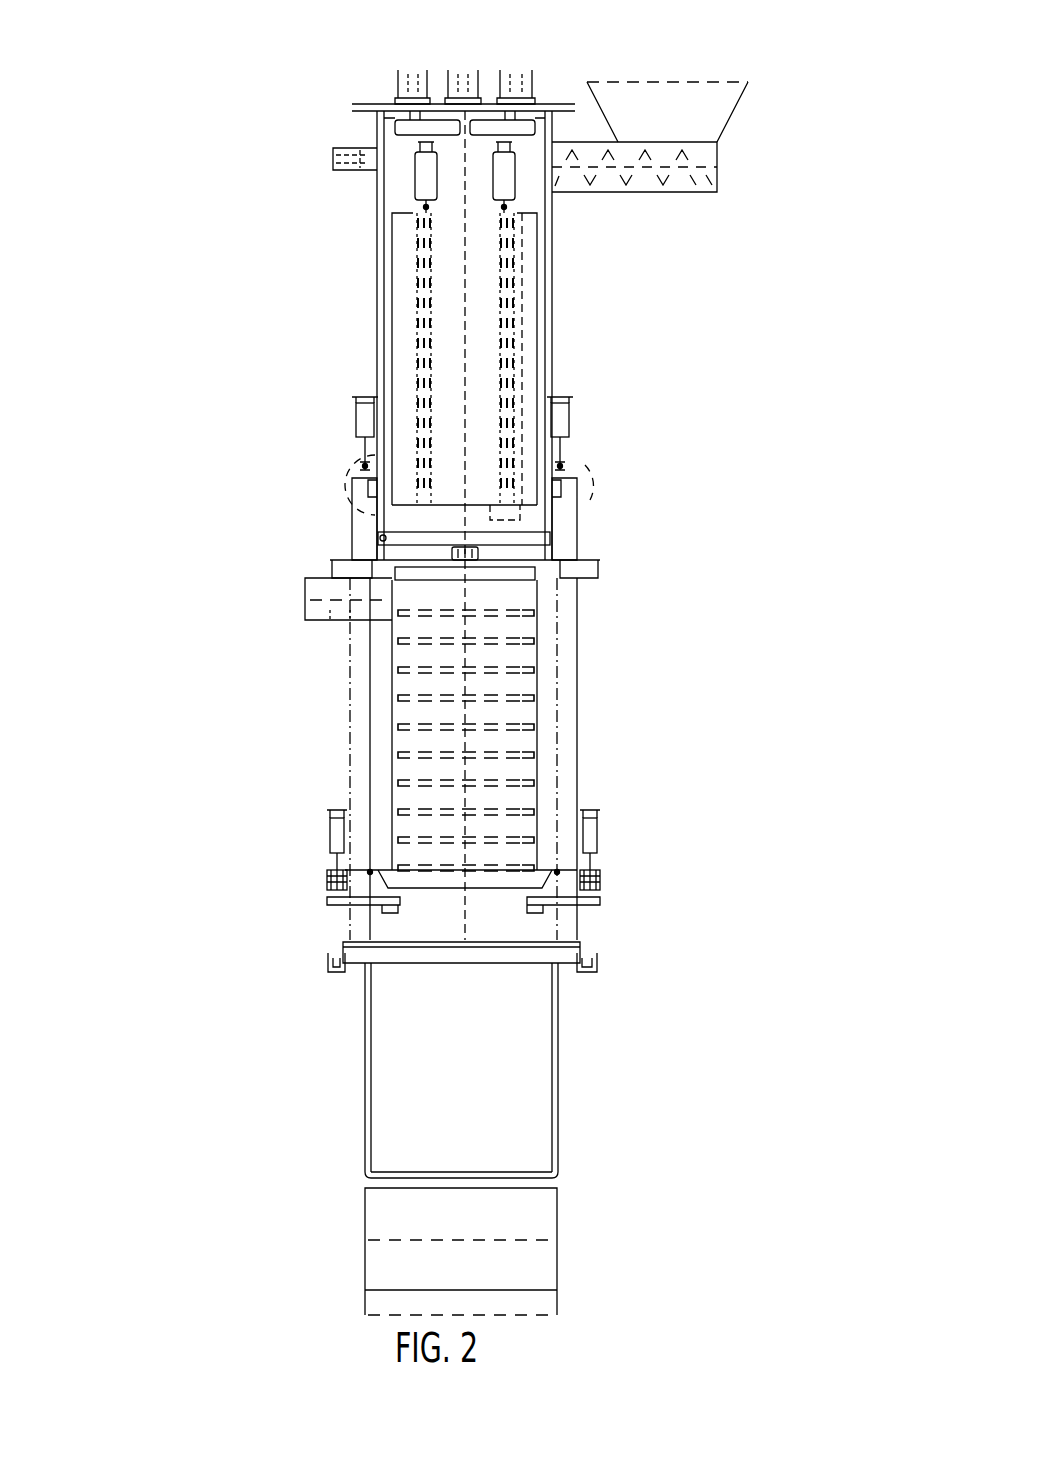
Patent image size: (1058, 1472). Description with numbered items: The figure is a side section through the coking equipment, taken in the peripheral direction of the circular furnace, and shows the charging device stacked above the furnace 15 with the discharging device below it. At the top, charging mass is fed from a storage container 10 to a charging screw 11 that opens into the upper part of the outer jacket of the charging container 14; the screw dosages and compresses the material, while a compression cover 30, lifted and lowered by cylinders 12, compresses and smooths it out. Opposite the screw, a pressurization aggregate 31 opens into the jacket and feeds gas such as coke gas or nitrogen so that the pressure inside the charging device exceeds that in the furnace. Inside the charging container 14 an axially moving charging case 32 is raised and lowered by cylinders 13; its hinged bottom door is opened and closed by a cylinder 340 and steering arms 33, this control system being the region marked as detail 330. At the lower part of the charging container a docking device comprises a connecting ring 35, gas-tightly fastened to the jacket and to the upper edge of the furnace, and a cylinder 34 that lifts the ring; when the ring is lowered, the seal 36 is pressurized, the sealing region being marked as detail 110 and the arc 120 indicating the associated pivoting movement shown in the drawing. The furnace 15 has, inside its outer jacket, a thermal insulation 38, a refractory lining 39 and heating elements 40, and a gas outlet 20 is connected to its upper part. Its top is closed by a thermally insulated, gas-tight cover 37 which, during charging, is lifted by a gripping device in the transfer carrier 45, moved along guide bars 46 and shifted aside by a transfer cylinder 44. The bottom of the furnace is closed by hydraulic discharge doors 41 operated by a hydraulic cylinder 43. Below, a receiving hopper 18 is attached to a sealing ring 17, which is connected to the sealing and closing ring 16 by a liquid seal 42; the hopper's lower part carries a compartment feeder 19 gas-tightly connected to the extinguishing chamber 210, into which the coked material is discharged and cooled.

The storage container 10 is at (702, 112).
The charging screw 11 is at (677, 197).
The cylinders 12 is at (476, 53).
The cylinders 13 is at (426, 53).
The charging container 14 is at (399, 335).
The furnace 15 is at (508, 750).
The sealing and closing ring 16 is at (419, 911).
The sealing ring 17 is at (408, 1003).
The receiving hopper 18 is at (397, 1071).
The compartment feeder 19 is at (520, 1239).
The gas outlet 20 is at (308, 627).
The compression cover 30 is at (423, 111).
The pressurization aggregate 31 is at (314, 174).
The charging case 32 is at (398, 366).
The steering arms 33 is at (384, 353).
The cylinder 34 is at (316, 426).
The connecting ring 35 is at (308, 519).
The seal 36 is at (510, 528).
The cover 37 is at (541, 586).
The thermal insulation 38 is at (519, 725).
The refractory lining 39 is at (621, 759).
The heating elements 40 is at (387, 740).
The hydraulic discharge doors 41 is at (529, 895).
The liquid seal 42 is at (417, 981).
The hydraulic cylinder 43 is at (637, 850).
The transfer cylinder 44 is at (348, 584).
The transfer carrier 45 is at (534, 491).
The guide bars 46 is at (409, 559).
The detail 110 is at (613, 415).
The pivot arc 120 is at (423, 476).
The extinguishing chamber 210 is at (530, 1294).
The detail 330 is at (538, 359).
The cylinder 340 is at (536, 199).